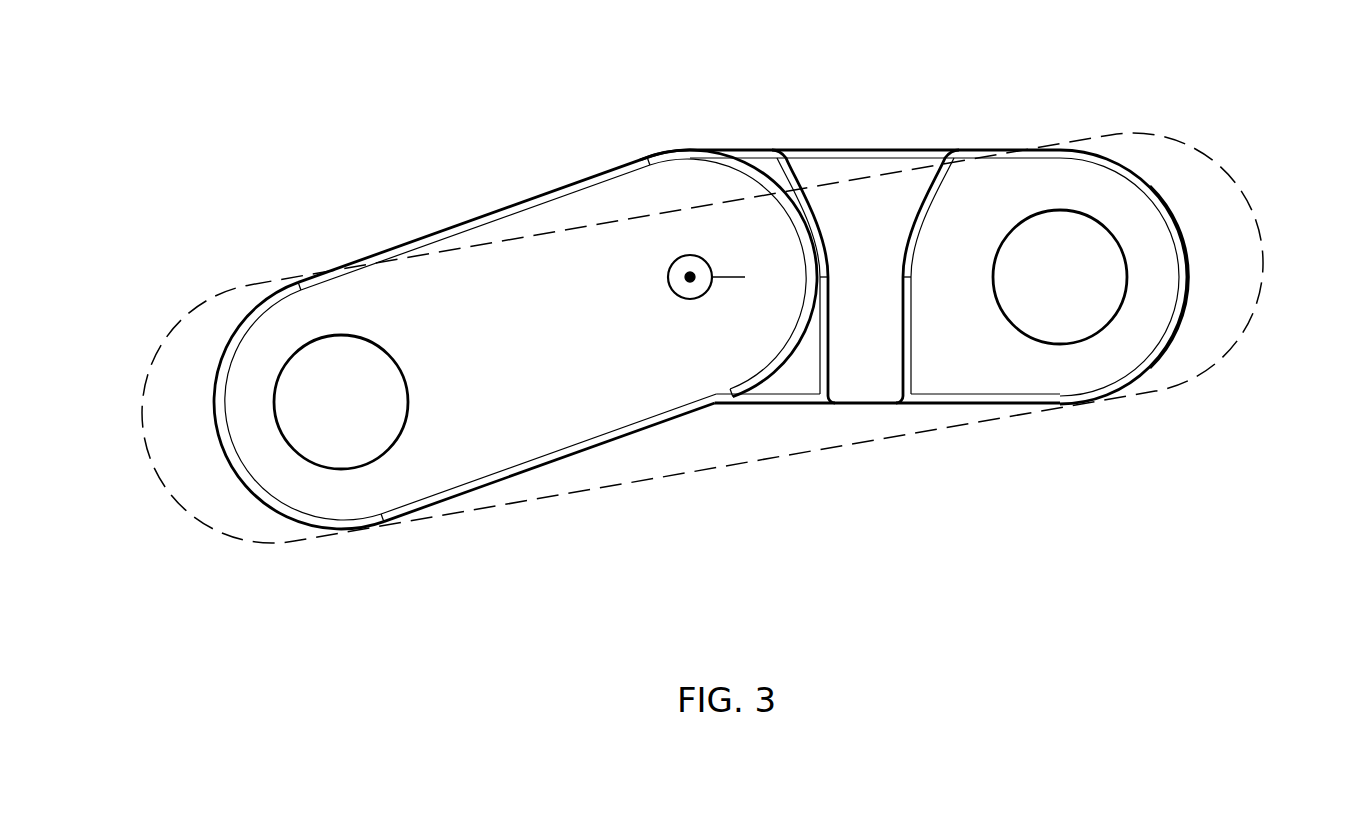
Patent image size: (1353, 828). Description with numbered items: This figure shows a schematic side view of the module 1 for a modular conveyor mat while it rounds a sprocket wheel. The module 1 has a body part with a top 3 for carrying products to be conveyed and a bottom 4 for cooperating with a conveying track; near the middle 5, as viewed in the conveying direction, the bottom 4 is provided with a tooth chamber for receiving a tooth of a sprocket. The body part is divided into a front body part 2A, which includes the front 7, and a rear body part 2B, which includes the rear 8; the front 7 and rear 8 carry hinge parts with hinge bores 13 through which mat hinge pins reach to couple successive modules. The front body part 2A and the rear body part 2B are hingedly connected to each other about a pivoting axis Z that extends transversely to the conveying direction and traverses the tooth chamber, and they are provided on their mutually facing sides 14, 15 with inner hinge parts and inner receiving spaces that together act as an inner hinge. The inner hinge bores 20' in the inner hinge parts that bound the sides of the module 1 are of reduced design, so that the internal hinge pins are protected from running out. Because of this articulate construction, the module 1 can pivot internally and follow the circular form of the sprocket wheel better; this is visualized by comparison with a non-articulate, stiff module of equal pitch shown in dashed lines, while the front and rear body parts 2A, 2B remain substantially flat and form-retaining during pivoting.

The module 1 is at (697, 344).
The front body part 2A is at (483, 292).
The rear body part 2B is at (985, 203).
The top 3 is at (570, 183).
The bottom 4 is at (506, 487).
The middle 5 is at (647, 158).
The front 7 is at (215, 405).
The rear 8 is at (1187, 277).
The hinge bores 13 is at (342, 433).
The mutually facing side of the front part 14 is at (660, 148).
The mutually facing side of the rear part 15 is at (840, 148).
The inner hinge bores of reduced design 20' is at (718, 436).